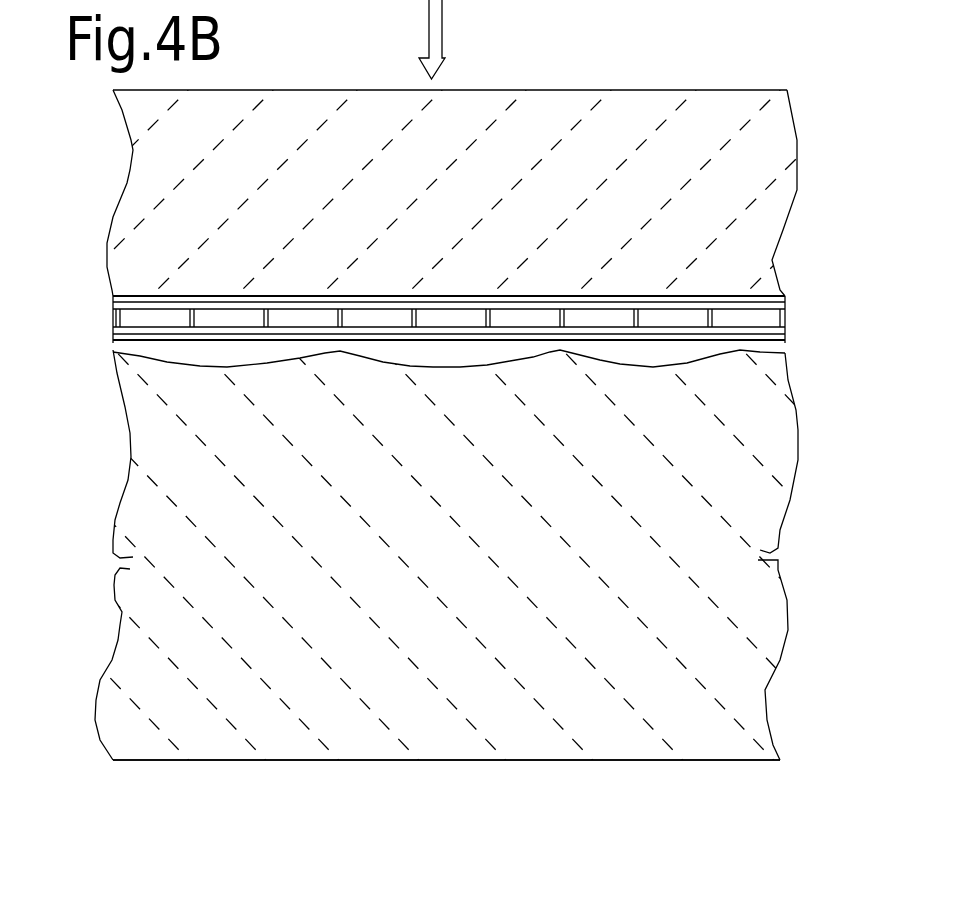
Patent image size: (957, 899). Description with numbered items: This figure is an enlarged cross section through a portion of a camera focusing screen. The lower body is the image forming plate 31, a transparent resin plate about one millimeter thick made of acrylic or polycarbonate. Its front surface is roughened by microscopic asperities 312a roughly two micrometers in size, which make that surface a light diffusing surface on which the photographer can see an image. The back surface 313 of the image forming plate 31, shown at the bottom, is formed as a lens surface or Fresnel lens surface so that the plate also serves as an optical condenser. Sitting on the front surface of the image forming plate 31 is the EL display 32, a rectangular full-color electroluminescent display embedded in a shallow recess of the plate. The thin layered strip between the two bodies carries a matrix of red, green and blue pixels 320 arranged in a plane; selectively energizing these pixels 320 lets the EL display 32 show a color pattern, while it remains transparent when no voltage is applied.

The EL display 32 is at (765, 225).
The image forming plate 31 is at (755, 628).
The microscopic asperities 312a is at (717, 353).
The back surface 313 is at (477, 761).
The pixels 320 is at (77, 198).